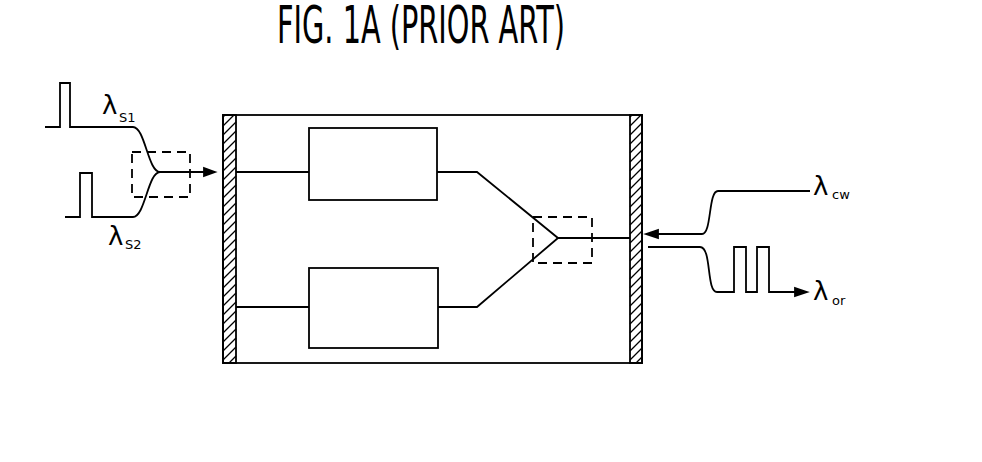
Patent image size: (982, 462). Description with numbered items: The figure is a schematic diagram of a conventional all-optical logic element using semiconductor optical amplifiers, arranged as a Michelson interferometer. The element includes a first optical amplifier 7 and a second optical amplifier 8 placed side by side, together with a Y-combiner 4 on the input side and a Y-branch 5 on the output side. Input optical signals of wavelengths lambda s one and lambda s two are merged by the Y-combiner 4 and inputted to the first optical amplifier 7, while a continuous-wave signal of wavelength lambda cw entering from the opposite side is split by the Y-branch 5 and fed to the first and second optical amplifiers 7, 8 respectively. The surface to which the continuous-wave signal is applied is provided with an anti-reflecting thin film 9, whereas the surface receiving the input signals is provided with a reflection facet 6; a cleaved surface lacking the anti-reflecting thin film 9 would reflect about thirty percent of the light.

The Y-combiner 4 is at (168, 151).
The Y-branch 5 is at (555, 217).
The reflection facet 6 is at (223, 337).
The first optical amplifier 7 is at (318, 200).
The second optical amplifier 8 is at (432, 268).
The anti-reflecting thin film 9 is at (642, 330).